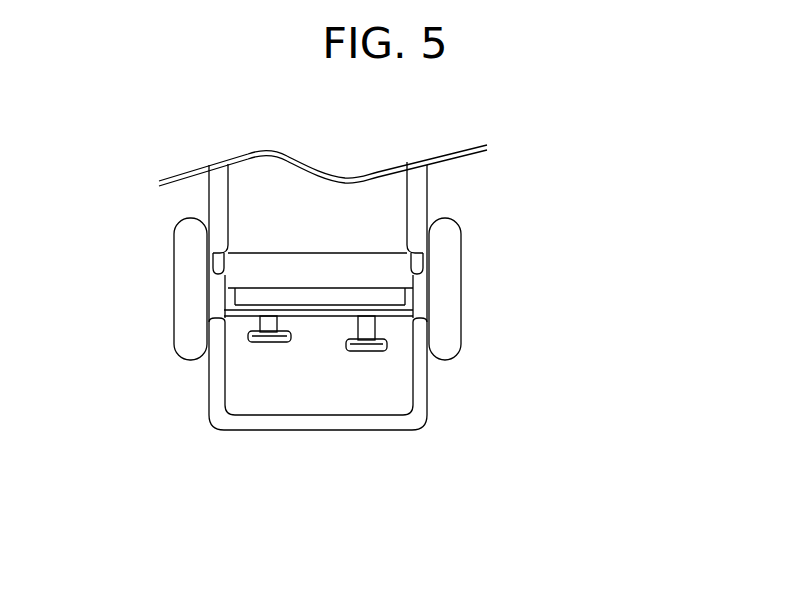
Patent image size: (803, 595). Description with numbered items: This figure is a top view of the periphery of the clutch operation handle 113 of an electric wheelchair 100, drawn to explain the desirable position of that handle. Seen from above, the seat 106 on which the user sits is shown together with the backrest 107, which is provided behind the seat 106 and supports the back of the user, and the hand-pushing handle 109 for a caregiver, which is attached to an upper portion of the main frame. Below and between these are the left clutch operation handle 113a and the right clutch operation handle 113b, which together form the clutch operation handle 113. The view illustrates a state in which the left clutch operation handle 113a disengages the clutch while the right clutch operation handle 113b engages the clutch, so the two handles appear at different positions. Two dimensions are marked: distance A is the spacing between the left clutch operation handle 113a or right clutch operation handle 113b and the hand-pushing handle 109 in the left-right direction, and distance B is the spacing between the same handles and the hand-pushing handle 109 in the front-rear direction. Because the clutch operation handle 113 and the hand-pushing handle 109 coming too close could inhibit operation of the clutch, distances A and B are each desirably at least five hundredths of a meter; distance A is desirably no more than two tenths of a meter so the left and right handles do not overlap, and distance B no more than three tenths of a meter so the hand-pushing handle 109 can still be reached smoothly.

The electric wheelchair 100 is at (514, 235).
The seat 106 is at (263, 210).
The backrest 107 is at (263, 272).
The hand-pushing handle 109 is at (216, 373).
The clutch operation handle 113 is at (299, 426).
The left clutch operation handle 113a is at (272, 342).
The right clutch operation handle 113b is at (366, 351).
The distance A is at (385, 352).
The distance B is at (387, 350).